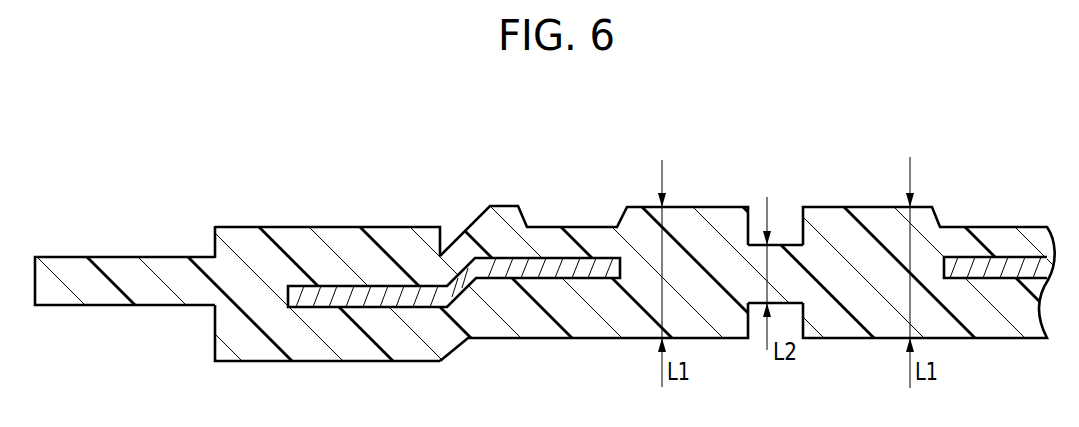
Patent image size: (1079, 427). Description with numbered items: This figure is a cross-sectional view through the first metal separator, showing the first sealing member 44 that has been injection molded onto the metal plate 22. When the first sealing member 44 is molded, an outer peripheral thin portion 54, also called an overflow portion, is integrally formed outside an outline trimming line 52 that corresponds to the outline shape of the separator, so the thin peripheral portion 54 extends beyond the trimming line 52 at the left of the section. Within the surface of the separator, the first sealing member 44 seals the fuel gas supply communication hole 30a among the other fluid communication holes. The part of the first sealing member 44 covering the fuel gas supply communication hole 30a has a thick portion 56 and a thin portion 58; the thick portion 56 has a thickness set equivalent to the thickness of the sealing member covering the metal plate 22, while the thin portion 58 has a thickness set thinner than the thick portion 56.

The metal plate 22 is at (1013, 267).
The fuel gas supply communication hole 30a is at (793, 243).
The first sealing member 44 is at (323, 198).
The outline trimming line 52 is at (215, 240).
The outer peripheral thin portion 54 is at (95, 287).
The thick portion 56 is at (723, 218).
The thin portion 58 is at (758, 277).